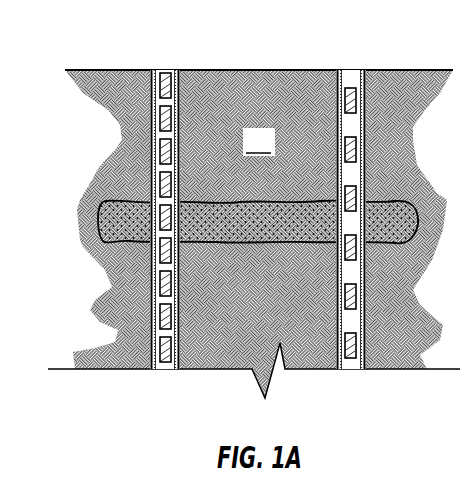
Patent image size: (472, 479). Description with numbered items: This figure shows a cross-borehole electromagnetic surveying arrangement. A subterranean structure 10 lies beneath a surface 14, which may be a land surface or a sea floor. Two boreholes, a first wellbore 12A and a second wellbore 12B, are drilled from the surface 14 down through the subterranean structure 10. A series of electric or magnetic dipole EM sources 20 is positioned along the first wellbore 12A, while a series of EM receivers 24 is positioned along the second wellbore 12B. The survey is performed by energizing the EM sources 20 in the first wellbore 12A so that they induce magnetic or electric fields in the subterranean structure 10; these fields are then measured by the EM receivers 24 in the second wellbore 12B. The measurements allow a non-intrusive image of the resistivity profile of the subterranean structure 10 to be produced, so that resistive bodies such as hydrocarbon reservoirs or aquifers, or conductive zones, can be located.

The subterranean structure 10 is at (254, 235).
The surface 14 is at (118, 70).
The first wellbore 12A is at (151, 350).
The second wellbore 12B is at (366, 350).
The EM sources 20 is at (167, 72).
The EM receivers 24 is at (354, 88).